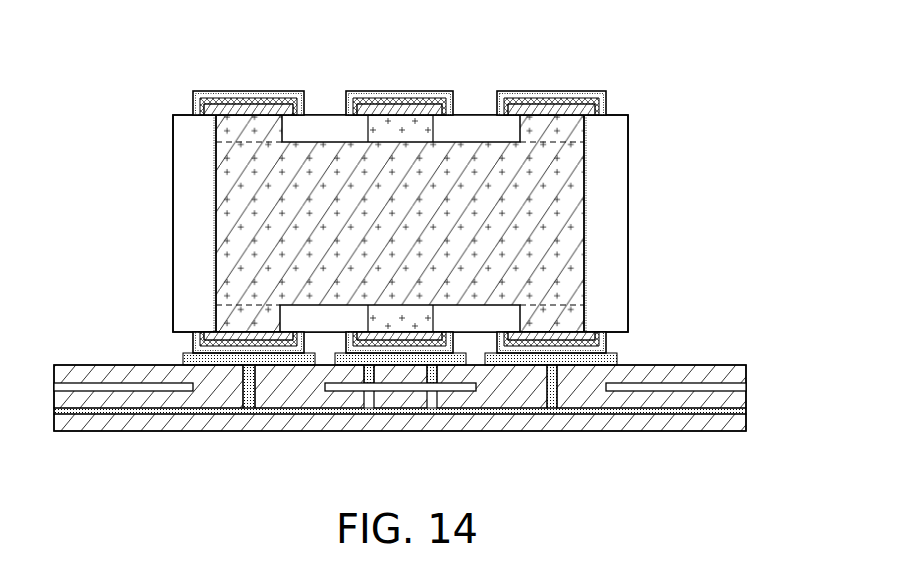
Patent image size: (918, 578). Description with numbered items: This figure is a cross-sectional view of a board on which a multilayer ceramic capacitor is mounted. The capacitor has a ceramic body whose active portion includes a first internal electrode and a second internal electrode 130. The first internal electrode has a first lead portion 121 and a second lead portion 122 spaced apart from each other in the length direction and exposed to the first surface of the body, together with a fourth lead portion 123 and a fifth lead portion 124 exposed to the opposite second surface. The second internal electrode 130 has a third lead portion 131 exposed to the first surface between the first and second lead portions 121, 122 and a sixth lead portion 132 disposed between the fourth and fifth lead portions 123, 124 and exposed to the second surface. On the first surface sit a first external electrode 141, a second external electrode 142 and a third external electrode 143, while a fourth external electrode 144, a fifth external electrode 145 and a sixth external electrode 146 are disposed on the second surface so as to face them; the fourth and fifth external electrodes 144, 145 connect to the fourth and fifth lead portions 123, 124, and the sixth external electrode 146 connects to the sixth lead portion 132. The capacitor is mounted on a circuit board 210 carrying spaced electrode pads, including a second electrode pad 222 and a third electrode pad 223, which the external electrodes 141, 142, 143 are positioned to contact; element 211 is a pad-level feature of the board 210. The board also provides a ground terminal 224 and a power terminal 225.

The second internal electrode 130 is at (563, 225).
The first lead portion 121 is at (213, 322).
The second lead portion 122 is at (577, 322).
The fourth lead portion 123 is at (213, 135).
The fifth lead portion 124 is at (577, 133).
The third lead portion 131 is at (370, 310).
The sixth lead portion 132 is at (387, 130).
The first external electrode 141 is at (266, 362).
The second external electrode 142 is at (572, 362).
The third external electrode 143 is at (416, 362).
The fourth external electrode 144 is at (250, 84).
The fifth external electrode 145 is at (551, 84).
The sixth external electrode 146 is at (400, 84).
The circuit board 210 is at (77, 422).
The first electrode pad 211 is at (208, 360).
The second electrode pad 222 is at (595, 363).
The third electrode pad 223 is at (457, 365).
The ground terminal 224 is at (713, 388).
The power terminal 225 is at (663, 411).